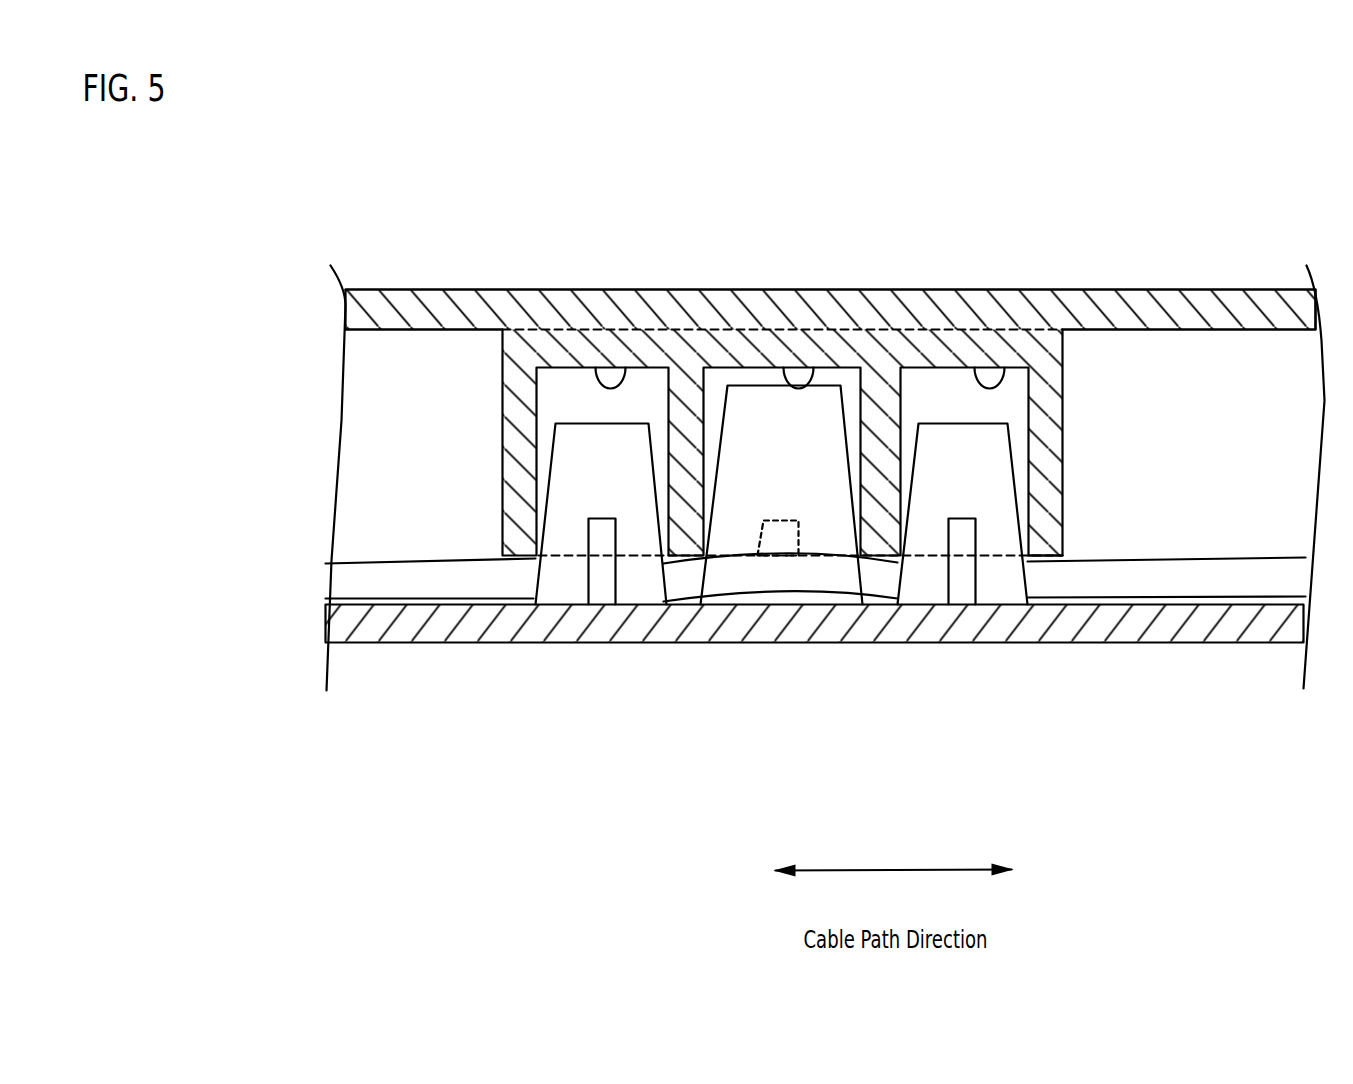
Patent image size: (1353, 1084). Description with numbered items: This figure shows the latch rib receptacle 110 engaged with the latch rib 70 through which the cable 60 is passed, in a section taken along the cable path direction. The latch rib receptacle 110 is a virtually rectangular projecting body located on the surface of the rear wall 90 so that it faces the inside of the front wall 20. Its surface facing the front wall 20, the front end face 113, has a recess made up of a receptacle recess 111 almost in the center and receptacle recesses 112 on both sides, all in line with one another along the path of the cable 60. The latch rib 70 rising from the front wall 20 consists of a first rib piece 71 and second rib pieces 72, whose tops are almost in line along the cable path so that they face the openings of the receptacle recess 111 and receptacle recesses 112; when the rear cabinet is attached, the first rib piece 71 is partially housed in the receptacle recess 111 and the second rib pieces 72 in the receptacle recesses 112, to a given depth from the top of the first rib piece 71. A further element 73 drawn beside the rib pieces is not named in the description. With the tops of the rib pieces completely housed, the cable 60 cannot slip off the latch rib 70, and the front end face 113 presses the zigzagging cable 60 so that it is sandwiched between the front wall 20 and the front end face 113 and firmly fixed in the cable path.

The front wall 20 is at (1156, 640).
The cable 60 is at (1232, 586).
The latch rib 70 is at (775, 604).
The first rib piece 71 is at (750, 540).
The second rib pieces 72 is at (640, 585).
The projection 73 is at (597, 585).
The rear wall 90 is at (1190, 289).
The latch rib receptacle 110 is at (910, 335).
The receptacle recess 111 is at (810, 388).
The receptacle recesses 112 is at (620, 385).
The front end face 113 is at (1047, 557).